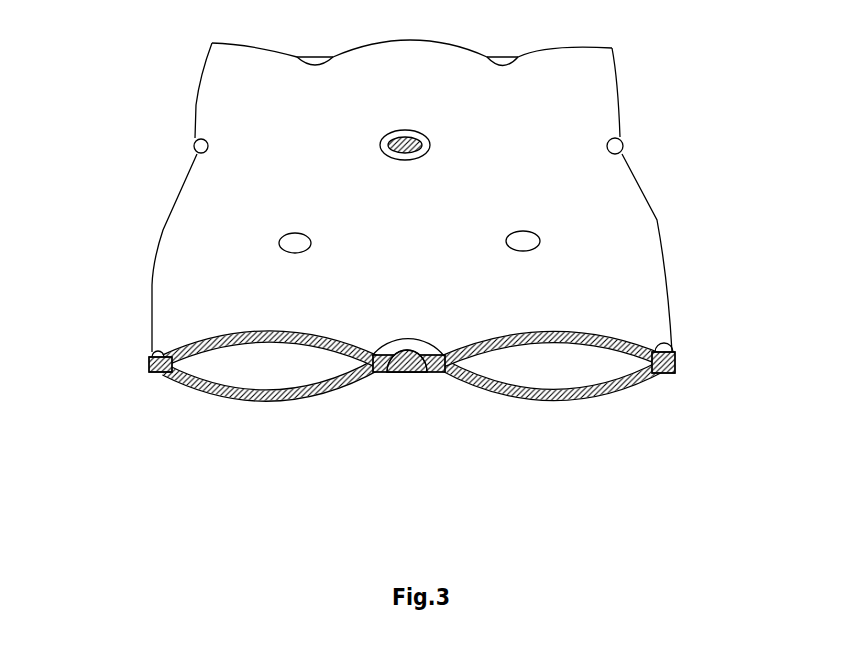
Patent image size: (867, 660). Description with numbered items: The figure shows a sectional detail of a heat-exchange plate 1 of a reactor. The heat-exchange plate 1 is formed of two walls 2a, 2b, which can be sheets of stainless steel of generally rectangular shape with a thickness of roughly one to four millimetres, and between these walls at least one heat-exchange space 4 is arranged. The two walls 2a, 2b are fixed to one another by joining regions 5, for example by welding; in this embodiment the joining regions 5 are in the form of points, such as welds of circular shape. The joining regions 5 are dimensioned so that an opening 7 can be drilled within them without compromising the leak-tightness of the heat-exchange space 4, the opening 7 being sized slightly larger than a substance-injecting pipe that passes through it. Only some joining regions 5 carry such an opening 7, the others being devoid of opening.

The heat-exchange plate 1 is at (398, 352).
The wall 2a is at (202, 340).
The wall 2b is at (187, 382).
The heat-exchange space 4 is at (240, 372).
The joining region 5 is at (623, 147).
The opening 7 is at (410, 373).